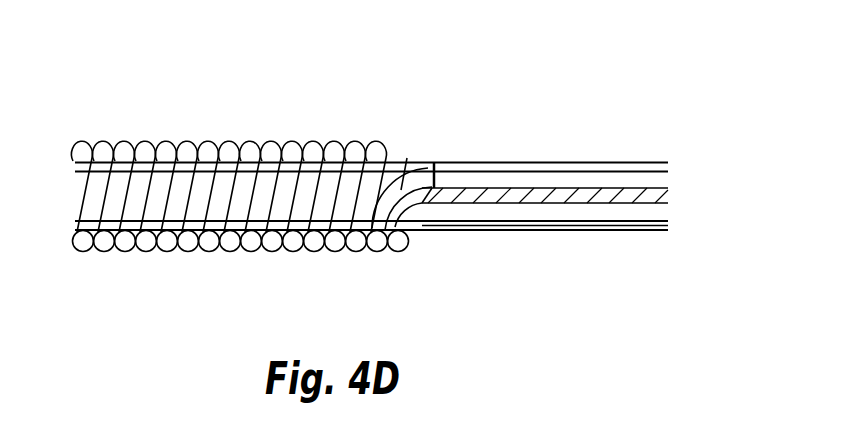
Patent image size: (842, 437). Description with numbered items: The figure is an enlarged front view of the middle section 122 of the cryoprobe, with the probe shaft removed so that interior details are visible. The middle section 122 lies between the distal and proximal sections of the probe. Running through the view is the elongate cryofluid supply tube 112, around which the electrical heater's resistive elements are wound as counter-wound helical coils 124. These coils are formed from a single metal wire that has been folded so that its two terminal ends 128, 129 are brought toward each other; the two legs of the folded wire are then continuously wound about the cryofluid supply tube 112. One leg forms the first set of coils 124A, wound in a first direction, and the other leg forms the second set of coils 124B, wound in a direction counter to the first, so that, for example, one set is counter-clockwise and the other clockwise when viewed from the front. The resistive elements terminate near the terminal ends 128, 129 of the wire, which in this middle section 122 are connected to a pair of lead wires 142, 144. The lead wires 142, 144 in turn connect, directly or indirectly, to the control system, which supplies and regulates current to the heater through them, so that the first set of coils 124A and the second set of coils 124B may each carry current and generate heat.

The middle section 122 is at (400, 87).
The counter-wound helical coils 124 is at (189, 118).
The first set of coils 124A is at (378, 143).
The second set of coils 124B is at (337, 237).
The terminal end 128 is at (418, 160).
The terminal end 129 is at (407, 217).
The lead wire 144 is at (662, 178).
The lead wire 142 is at (653, 212).
The cryofluid supply tube 112 is at (553, 232).